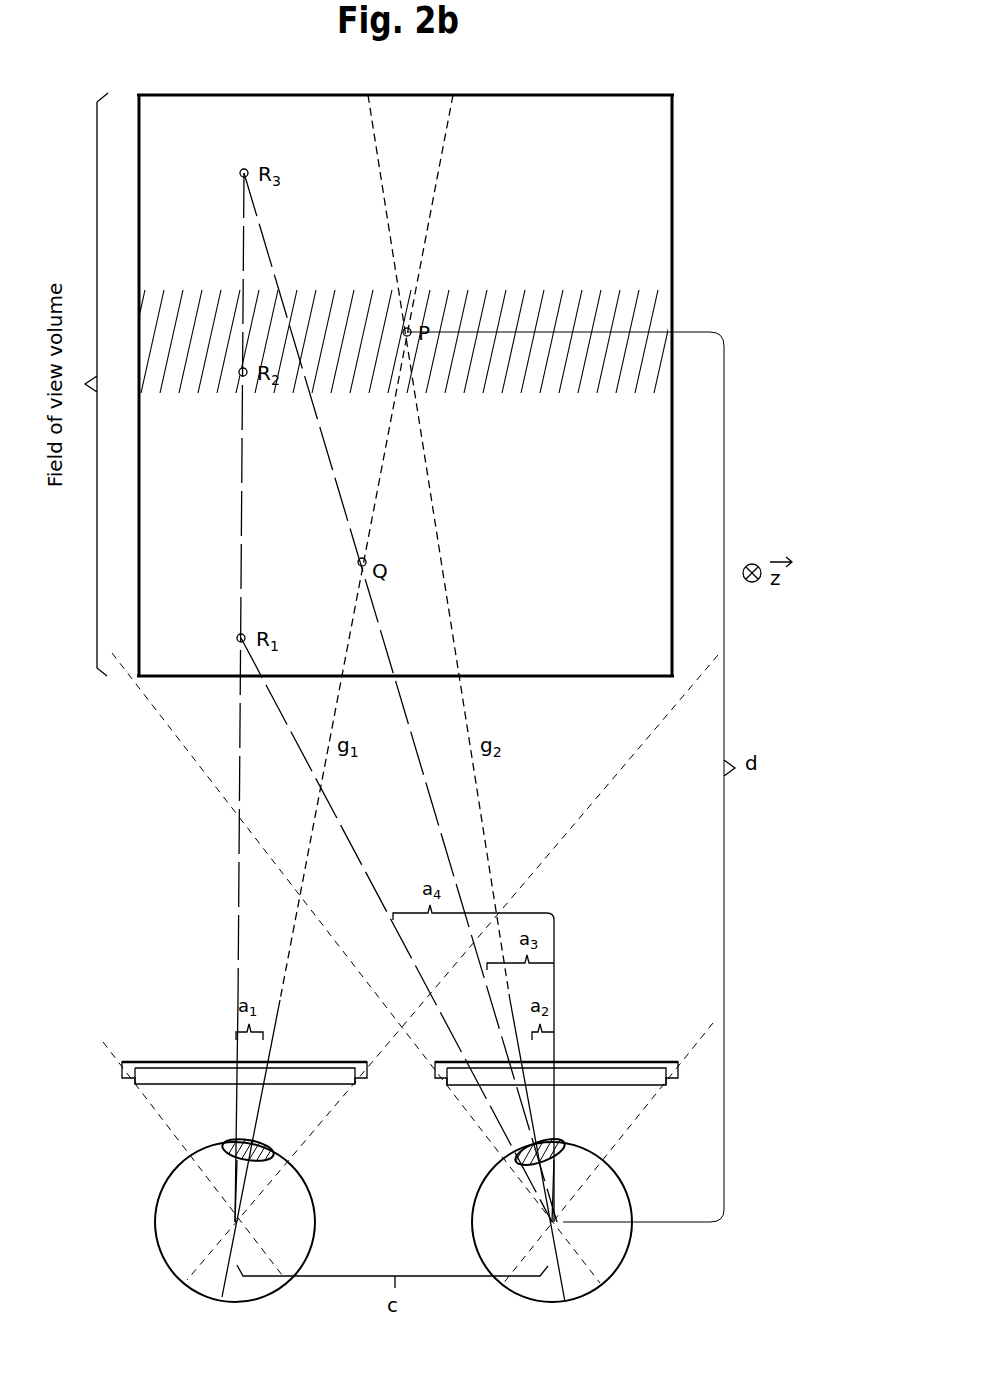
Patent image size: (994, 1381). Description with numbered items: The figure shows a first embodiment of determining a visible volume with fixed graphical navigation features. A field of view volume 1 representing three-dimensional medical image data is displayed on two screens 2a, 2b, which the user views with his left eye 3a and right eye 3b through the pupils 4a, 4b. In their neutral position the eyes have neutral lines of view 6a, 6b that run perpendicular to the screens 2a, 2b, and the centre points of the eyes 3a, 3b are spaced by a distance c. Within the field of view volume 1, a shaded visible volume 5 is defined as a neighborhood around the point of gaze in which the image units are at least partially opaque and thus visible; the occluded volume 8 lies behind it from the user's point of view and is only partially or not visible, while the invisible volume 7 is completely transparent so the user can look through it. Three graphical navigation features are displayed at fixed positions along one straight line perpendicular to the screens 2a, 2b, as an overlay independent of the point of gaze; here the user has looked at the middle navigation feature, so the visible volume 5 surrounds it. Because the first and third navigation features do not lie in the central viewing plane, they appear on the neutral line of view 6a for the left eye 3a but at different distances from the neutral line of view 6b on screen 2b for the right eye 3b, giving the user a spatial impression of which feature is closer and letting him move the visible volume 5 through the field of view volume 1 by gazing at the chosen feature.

The field of view volume 1 is at (672, 215).
The occluded volume 8 is at (645, 151).
The visible volume 5 is at (645, 311).
The invisible volume 7 is at (645, 478).
The screen 2a is at (172, 1061).
The screen 2b is at (610, 1062).
The left eye 3a is at (160, 1248).
The right eye 3b is at (630, 1250).
The pupil 4a is at (268, 1143).
The pupil 4b is at (566, 1148).
The neutral line of view 6a is at (233, 1174).
The neutral line of view 6b is at (557, 1180).